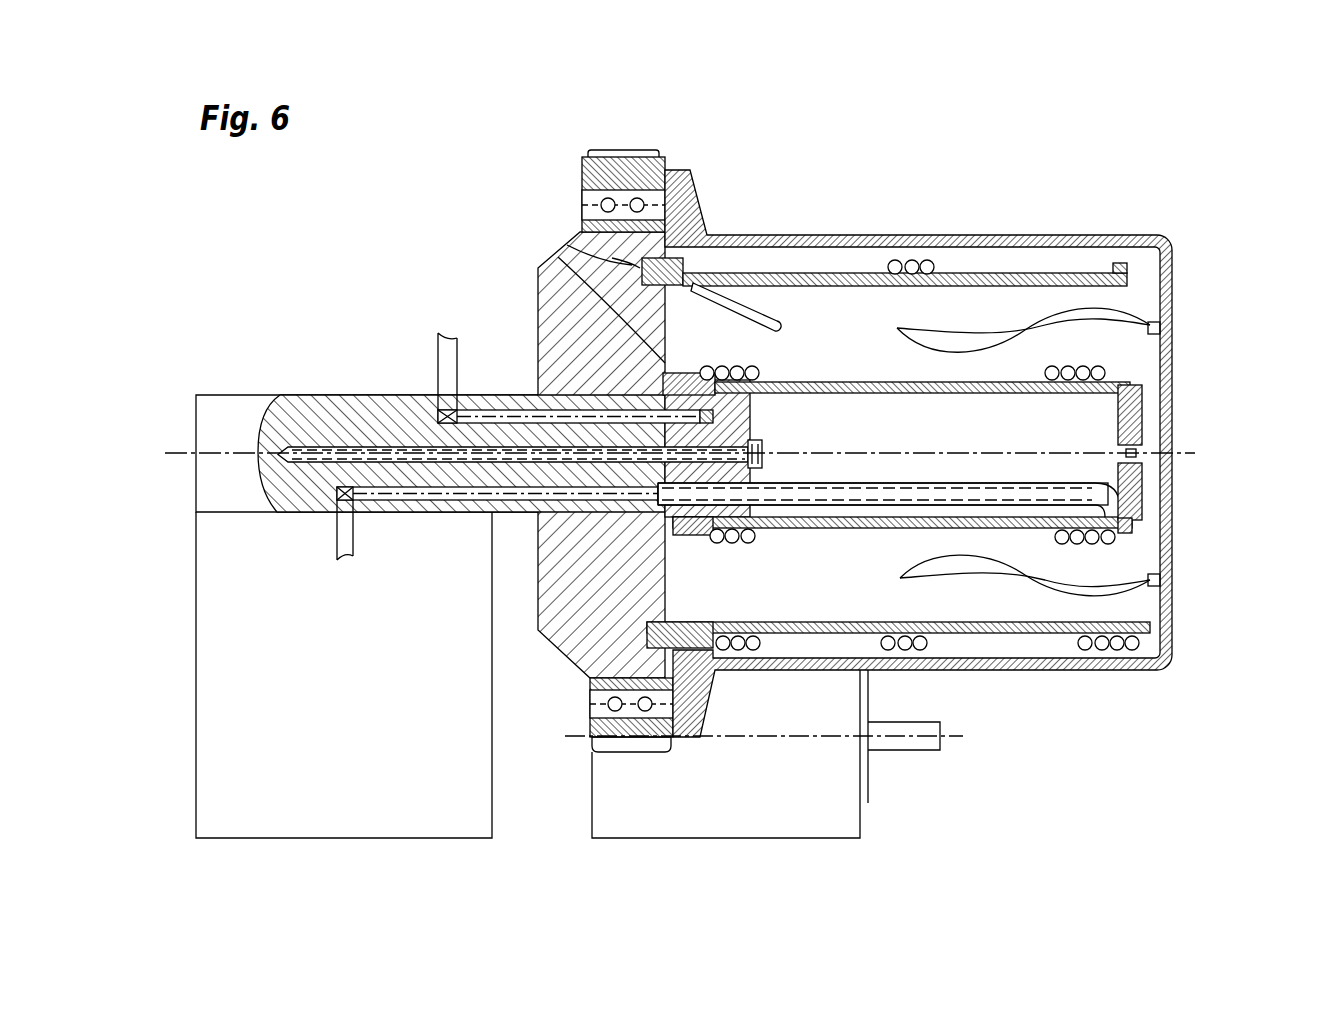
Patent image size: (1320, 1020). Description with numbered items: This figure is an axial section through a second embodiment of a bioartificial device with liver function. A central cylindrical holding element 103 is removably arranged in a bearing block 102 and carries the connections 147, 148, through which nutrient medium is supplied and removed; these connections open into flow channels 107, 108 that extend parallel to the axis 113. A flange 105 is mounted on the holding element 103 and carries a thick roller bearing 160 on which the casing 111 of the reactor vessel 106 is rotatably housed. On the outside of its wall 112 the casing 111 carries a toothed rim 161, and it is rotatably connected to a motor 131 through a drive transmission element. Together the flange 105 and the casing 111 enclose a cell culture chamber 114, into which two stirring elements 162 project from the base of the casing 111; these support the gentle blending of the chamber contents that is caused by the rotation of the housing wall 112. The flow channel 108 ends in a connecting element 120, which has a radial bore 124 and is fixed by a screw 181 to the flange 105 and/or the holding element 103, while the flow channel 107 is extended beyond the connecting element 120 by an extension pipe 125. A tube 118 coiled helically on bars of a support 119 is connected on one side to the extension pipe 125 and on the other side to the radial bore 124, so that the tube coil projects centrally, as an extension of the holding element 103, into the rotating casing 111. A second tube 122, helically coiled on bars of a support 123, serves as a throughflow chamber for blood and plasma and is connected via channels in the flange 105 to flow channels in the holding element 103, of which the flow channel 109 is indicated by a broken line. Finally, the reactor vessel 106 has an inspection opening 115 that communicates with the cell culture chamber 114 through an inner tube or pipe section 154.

The bearing block 102 is at (270, 773).
The holding element 103 is at (228, 427).
The flange 105 is at (590, 580).
The reactor vessel 106 is at (845, 228).
The flow channel 107 is at (428, 496).
The flow channel 108 is at (508, 408).
The flow channel 109 is at (362, 443).
The casing 111 is at (960, 238).
The wall 112 is at (1072, 670).
The axis 113 is at (1187, 455).
The cell culture chamber 114 is at (885, 355).
The inspection opening 115 is at (613, 258).
The tube 118 is at (1097, 372).
The support 119 is at (1133, 380).
The connecting element 120 is at (590, 703).
The second tube 122 is at (917, 640).
The support 123 is at (1025, 278).
The radial bore 124 is at (677, 370).
The extension pipe 125 is at (1133, 527).
The motor 131 is at (810, 805).
The connection 147 is at (345, 542).
The connection 148 is at (445, 372).
The inner tube or pipe section 154 is at (740, 302).
The roller bearing 160 is at (582, 150).
The toothed rim 161 is at (632, 150).
The stirring elements 162 is at (1085, 315).
The screw 181 is at (760, 440).